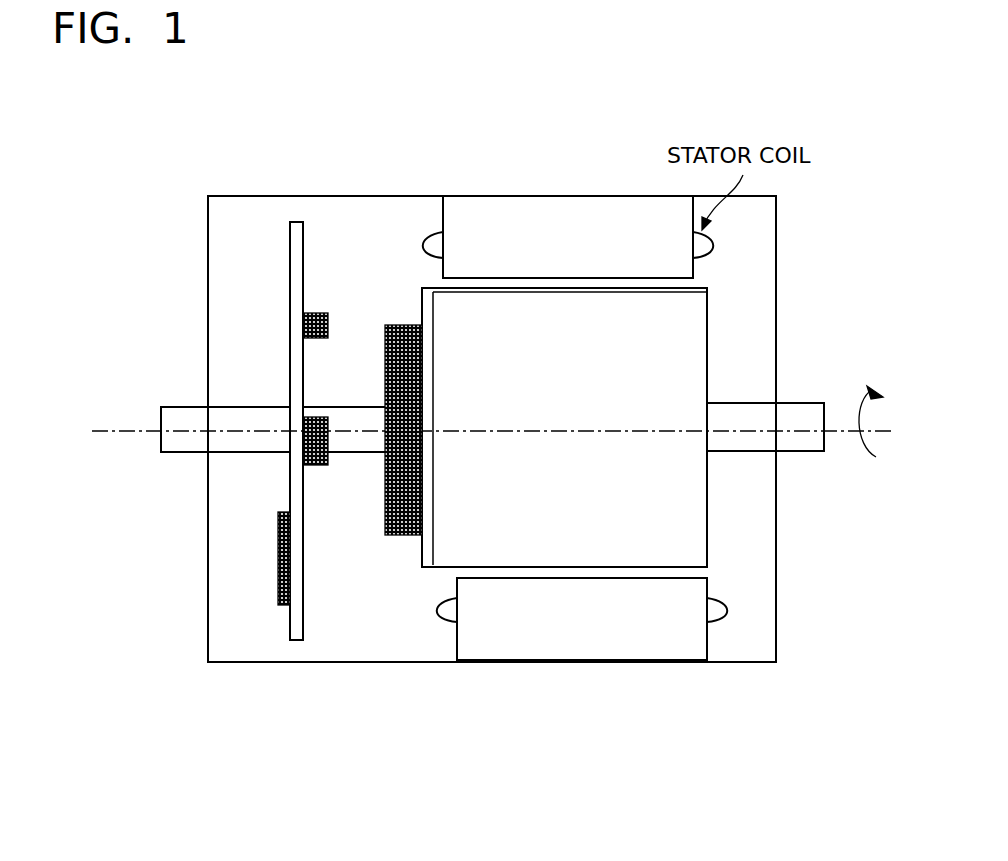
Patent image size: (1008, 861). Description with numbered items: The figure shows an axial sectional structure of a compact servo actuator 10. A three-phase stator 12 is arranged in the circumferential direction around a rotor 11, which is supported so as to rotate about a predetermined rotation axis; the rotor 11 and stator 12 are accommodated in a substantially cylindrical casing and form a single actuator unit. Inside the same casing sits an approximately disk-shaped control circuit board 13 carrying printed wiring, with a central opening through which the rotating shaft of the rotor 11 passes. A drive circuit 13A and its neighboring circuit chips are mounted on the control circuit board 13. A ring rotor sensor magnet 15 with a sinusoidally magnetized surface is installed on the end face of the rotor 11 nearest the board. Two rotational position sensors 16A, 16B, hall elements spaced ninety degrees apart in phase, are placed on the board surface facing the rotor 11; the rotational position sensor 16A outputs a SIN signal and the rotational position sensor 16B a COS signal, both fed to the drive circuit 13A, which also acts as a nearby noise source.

The servo actuator 10 is at (692, 672).
The rotor 11 is at (802, 388).
The stator 12 is at (522, 216).
The control circuit board 13 is at (297, 644).
The drive circuit 13A is at (276, 578).
The ring rotor sensor magnet 15 is at (400, 540).
The rotational position sensor 16A is at (314, 312).
The rotational position sensor 16B is at (274, 452).